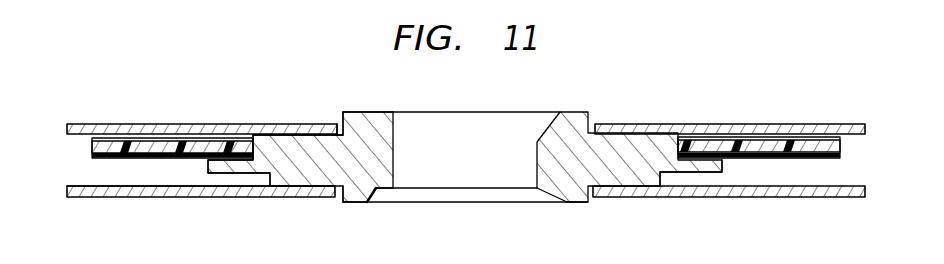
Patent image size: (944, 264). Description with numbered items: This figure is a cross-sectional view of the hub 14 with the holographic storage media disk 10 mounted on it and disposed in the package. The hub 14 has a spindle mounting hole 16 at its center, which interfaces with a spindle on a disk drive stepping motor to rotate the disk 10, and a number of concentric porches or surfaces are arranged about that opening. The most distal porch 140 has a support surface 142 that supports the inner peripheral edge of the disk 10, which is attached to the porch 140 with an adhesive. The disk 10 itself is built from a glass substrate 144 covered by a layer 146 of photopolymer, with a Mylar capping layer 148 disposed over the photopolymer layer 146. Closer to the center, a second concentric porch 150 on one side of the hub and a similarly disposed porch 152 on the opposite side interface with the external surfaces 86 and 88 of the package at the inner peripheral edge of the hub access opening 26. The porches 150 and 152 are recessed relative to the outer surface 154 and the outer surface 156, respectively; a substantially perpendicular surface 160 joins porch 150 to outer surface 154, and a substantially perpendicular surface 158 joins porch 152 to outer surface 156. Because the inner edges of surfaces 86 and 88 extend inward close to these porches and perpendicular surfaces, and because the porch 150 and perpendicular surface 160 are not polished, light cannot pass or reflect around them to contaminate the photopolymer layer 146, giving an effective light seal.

The holographic storage media disk 10 is at (764, 172).
The hub 14 is at (572, 113).
The spindle mounting hole 16 is at (394, 144).
The hub access opening 26 is at (342, 112).
The external surface of the package 86 is at (797, 123).
The external surface of the package 88 is at (802, 198).
The porch 140 is at (684, 178).
The support surface 142 is at (700, 158).
The glass substrate 144 is at (141, 129).
The layer of photopolymer 146 is at (143, 147).
The Mylar capping layer 148 is at (214, 146).
The second concentric porch 150 is at (284, 134).
The porch 152 is at (290, 197).
The outer surface 154 is at (388, 112).
The outer surface 156 is at (354, 204).
The perpendicular surface 158 is at (339, 204).
The perpendicular surface 160 is at (340, 111).